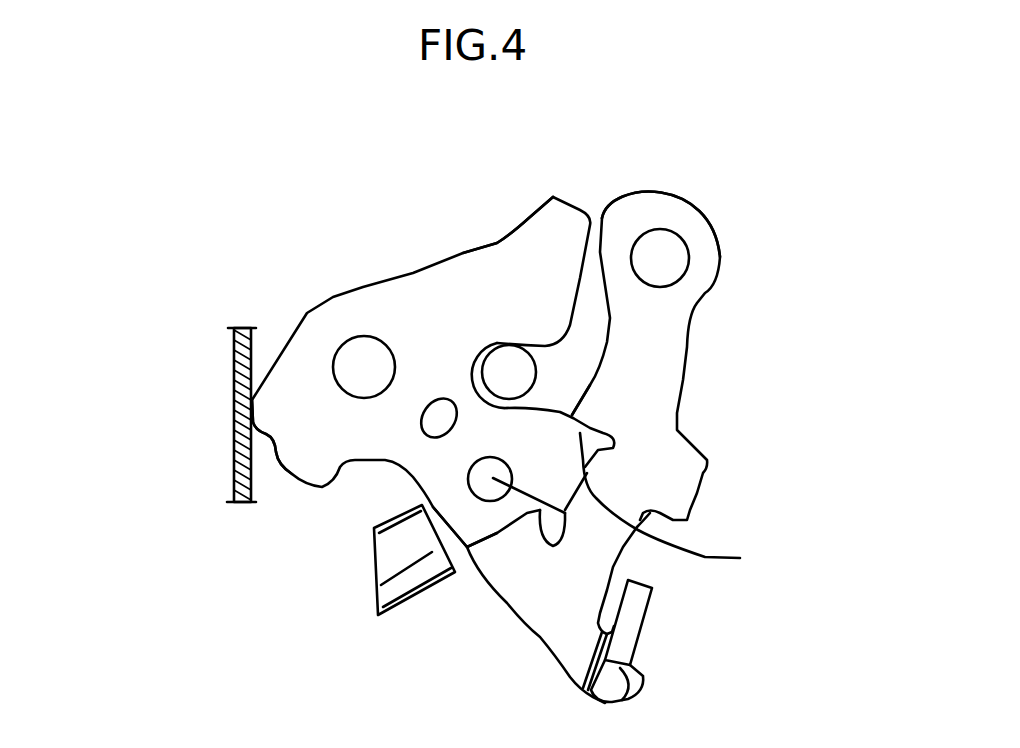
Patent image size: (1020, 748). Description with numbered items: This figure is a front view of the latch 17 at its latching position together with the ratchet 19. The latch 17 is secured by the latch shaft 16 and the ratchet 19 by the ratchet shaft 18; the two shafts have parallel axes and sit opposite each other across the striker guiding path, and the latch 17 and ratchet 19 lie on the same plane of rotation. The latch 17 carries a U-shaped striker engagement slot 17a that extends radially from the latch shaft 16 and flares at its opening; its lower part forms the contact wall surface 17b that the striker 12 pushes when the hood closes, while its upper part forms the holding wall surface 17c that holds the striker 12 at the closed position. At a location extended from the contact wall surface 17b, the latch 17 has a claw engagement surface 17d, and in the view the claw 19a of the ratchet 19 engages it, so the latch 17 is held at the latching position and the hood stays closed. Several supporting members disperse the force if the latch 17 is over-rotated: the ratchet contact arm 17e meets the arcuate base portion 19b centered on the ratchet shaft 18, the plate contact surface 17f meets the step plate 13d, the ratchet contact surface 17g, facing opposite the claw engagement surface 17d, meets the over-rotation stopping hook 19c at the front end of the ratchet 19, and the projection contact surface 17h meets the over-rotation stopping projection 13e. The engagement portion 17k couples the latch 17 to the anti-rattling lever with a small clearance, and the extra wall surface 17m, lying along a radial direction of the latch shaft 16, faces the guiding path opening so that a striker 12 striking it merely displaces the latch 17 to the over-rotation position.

The striker 12 is at (497, 365).
The step plate 13d is at (233, 365).
The over-rotation stopping projection 13e is at (377, 590).
The latch shaft 16 is at (350, 360).
The latch 17 is at (350, 292).
The striker engagement slot 17a is at (547, 373).
The contact wall surface 17b is at (512, 412).
The holding wall surface 17c is at (510, 345).
The claw engagement surface 17d is at (681, 502).
The ratchet contact arm 17e is at (568, 248).
The plate contact surface 17f is at (277, 470).
The ratchet contact surface 17g is at (527, 547).
The projection contact surface 17h is at (440, 531).
The engagement portion 17k is at (567, 515).
The extra wall surface 17m is at (513, 224).
The ratchet shaft 18 is at (663, 257).
The ratchet 19 is at (677, 477).
The claw 19a is at (593, 413).
The base portion 19b is at (602, 218).
The over-rotation stopping hook 19c is at (525, 538).